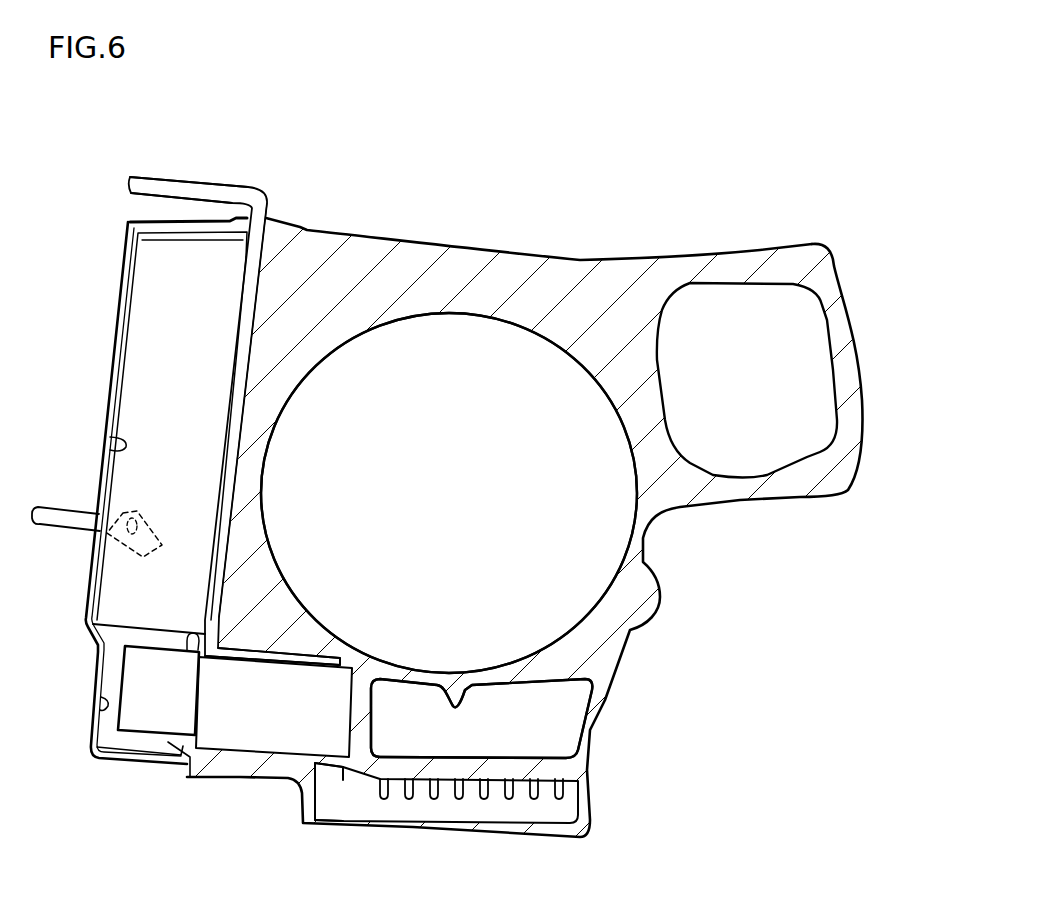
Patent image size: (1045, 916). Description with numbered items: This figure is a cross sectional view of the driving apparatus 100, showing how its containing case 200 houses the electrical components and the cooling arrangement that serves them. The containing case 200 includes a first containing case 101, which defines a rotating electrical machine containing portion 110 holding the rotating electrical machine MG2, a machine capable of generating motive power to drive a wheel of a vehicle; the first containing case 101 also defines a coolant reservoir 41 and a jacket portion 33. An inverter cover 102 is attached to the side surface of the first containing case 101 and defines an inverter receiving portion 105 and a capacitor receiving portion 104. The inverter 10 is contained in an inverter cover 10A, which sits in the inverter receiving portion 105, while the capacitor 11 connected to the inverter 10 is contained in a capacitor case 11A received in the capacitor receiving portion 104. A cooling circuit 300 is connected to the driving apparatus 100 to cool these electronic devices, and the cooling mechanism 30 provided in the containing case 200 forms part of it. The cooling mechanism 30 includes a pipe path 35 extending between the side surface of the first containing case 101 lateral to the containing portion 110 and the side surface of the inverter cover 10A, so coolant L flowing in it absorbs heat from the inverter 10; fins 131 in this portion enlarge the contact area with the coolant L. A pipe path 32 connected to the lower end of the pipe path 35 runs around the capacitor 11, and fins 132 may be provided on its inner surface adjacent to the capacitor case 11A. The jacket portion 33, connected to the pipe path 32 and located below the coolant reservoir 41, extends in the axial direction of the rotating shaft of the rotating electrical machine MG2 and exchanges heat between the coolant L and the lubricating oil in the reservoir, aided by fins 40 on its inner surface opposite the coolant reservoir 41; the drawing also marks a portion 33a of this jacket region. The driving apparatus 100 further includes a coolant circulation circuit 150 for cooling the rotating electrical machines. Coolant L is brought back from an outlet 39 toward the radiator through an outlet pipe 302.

The driving apparatus 100 is at (664, 225).
The first containing case 101 is at (388, 273).
The inverter cover 102 is at (147, 217).
The capacitor receiving portion 104 is at (100, 703).
The inverter receiving portion 105 is at (113, 446).
The rotating electrical machine containing portion 110 is at (448, 328).
The fins (inverter heat dissipating units) 131 is at (263, 378).
The fins (capacitor heat dissipating units) 132 is at (218, 666).
The containing case 200 is at (527, 253).
The cooling circuit 300 is at (73, 163).
The outlet pipe 302 is at (58, 527).
The cooling mechanism 30 is at (287, 200).
The pipe path 32 is at (263, 648).
The jacket portion 33 is at (363, 793).
The cooling passage inlet portion 33a is at (330, 763).
The pipe path 35 is at (188, 182).
The outlet 39 is at (120, 514).
The fins (lubricating oil heat dissipating units) 40 is at (483, 801).
The coolant reservoir 41 is at (547, 722).
The coolant circulation circuit 150 is at (481, 718).
The inverter 10 is at (220, 255).
The inverter cover 10A is at (152, 282).
The capacitor 11 is at (170, 703).
The capacitor case 11A is at (115, 758).
The coolant L is at (253, 204).
The rotating electrical machine MG2 is at (568, 517).